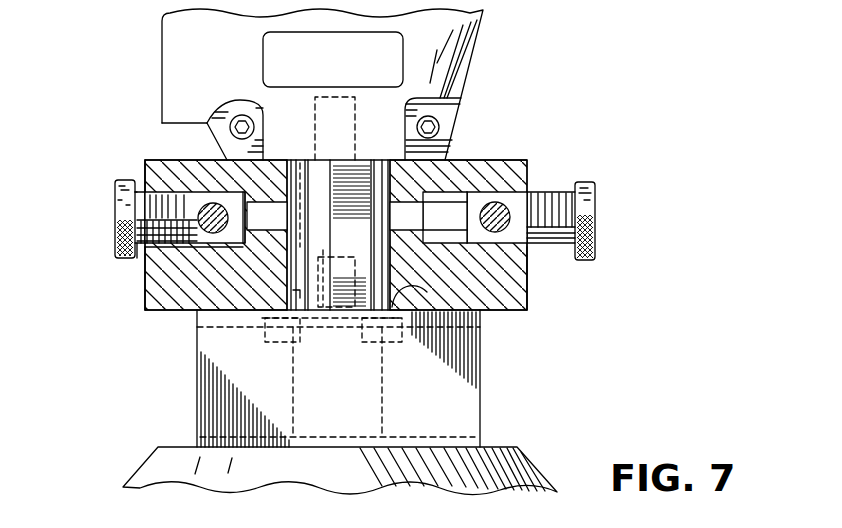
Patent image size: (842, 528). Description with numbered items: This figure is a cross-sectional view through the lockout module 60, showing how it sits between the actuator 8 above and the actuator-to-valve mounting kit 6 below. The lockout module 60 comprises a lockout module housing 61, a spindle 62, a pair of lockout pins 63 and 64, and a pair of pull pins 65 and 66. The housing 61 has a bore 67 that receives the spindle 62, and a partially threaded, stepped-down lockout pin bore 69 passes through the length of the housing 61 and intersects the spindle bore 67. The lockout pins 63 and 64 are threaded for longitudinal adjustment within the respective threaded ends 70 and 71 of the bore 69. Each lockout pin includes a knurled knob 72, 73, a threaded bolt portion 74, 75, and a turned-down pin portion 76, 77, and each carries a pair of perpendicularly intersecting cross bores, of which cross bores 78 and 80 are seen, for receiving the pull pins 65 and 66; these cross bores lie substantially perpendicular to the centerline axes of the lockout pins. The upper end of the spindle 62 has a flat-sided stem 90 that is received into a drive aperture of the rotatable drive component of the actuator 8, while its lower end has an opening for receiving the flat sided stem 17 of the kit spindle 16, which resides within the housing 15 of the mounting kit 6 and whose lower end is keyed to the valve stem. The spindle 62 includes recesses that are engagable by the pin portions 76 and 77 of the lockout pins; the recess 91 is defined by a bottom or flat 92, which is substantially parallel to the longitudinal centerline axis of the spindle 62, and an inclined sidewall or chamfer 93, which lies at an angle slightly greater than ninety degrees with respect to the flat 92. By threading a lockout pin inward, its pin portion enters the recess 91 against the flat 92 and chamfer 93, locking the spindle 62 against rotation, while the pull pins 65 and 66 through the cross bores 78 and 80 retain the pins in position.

The actuator-to-valve mounting kit 6 is at (190, 388).
The actuator 8 is at (486, 60).
The housing 15 is at (462, 402).
The spindle 16 is at (385, 402).
The flat sided stem 17 is at (267, 312).
The lockout module 60 is at (602, 150).
The lockout module housing 61 is at (227, 268).
The spindle 62 is at (428, 312).
The lockout pin 63 is at (111, 176).
The lockout pin 64 is at (606, 200).
The pull pin 65 is at (225, 205).
The pull pin 66 is at (528, 190).
The bore 67 is at (455, 147).
The lockout pin bore 69 is at (150, 275).
The threaded end 70 is at (145, 260).
The threaded end 71 is at (530, 250).
The knurled knob 72 is at (115, 238).
The knurled knob 73 is at (595, 257).
The threaded bolt portion 74 is at (162, 203).
The threaded bolt portion 75 is at (562, 185).
The turned-down pin portion 76 is at (250, 195).
The turned-down pin portion 77 is at (492, 312).
The cross bore 78 is at (210, 116).
The cross bore 80 is at (507, 205).
The flat-sided stem 90 is at (347, 127).
The recess 91 is at (343, 315).
The flat 92 is at (358, 187).
The chamfer 93 is at (328, 244).